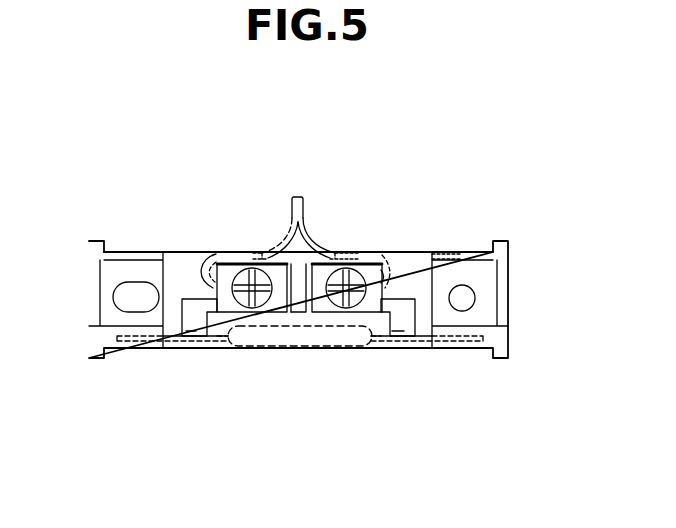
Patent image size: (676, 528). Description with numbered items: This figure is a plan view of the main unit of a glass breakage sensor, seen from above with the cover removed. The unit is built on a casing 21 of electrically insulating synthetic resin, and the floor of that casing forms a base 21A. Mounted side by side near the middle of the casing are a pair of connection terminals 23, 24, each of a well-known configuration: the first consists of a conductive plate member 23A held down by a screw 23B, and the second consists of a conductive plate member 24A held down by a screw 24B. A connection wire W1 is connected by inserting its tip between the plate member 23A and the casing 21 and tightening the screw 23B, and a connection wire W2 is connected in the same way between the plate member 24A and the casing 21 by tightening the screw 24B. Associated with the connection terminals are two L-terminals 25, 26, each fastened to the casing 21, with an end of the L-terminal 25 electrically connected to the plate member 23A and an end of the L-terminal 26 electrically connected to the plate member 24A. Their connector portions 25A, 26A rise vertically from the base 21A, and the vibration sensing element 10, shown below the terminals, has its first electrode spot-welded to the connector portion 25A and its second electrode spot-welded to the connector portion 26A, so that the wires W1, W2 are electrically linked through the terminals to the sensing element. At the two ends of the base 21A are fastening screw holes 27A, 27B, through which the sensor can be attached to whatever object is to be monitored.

The vibration sensing element 10 is at (307, 328).
The casing 21 is at (512, 288).
The base 21A is at (173, 263).
The connection terminal 23 is at (232, 262).
The conductive plate member 23A is at (204, 262).
The screw 23B is at (263, 252).
The connection terminal 24 is at (398, 263).
The conductive plate member 24A is at (435, 261).
The screw 24B is at (366, 255).
The L-terminal 25 is at (182, 303).
The connector portion 25A is at (190, 325).
The L-terminal 26 is at (412, 312).
The connector portion 26A is at (398, 325).
The fastening screw hole 27A is at (116, 297).
The fastening screw hole 27B is at (475, 300).
The connection wire W1 is at (292, 223).
The connection wire W2 is at (306, 221).